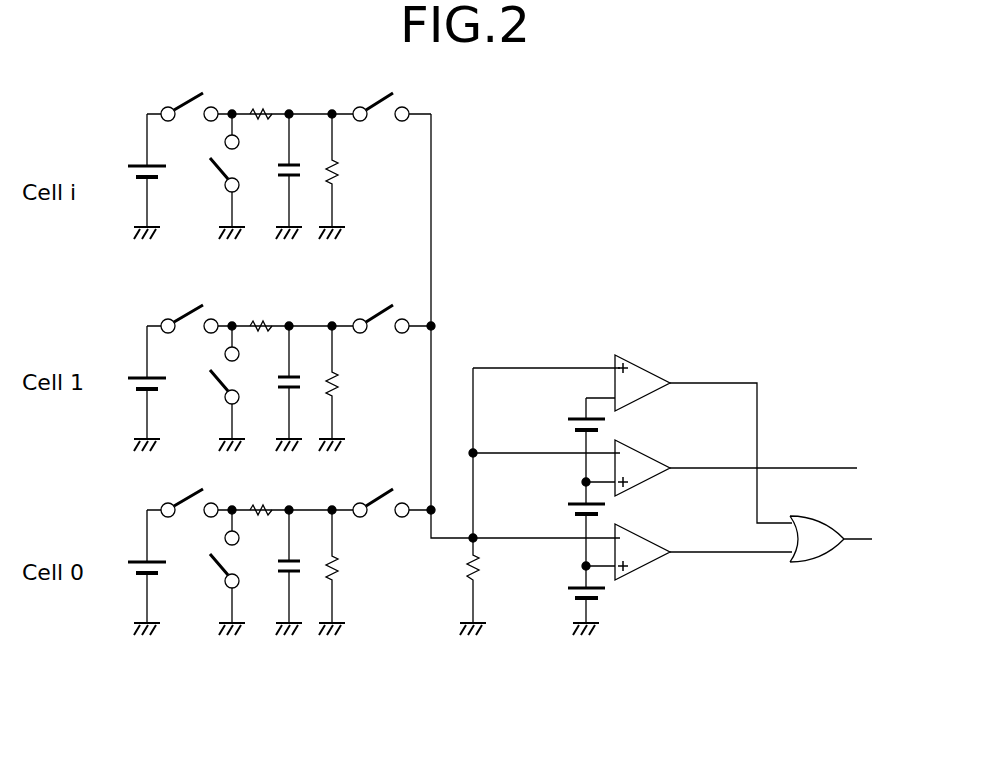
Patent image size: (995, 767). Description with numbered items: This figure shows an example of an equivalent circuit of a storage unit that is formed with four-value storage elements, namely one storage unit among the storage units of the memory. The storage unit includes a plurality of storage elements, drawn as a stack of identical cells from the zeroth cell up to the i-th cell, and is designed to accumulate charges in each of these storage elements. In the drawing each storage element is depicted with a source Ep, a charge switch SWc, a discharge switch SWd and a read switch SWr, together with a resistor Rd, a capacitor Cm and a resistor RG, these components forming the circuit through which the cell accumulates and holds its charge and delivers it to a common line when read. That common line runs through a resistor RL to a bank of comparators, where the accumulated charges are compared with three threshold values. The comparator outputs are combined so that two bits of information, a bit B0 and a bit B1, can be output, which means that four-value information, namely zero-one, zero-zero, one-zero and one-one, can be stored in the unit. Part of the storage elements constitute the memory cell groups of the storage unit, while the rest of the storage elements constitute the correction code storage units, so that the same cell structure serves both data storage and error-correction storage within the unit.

The cell electromotive force (battery) Ep is at (136, 374).
The charge switch SWc is at (165, 298).
The discharge switch SWd is at (208, 376).
The read switch SWr is at (368, 299).
The discharge resistor Rd is at (248, 299).
The measurement capacitor Cm is at (274, 374).
The ground resistor RG is at (345, 372).
The load resistor RL is at (462, 501).
The bit B1 is at (788, 468).
The bit B0 is at (788, 472).